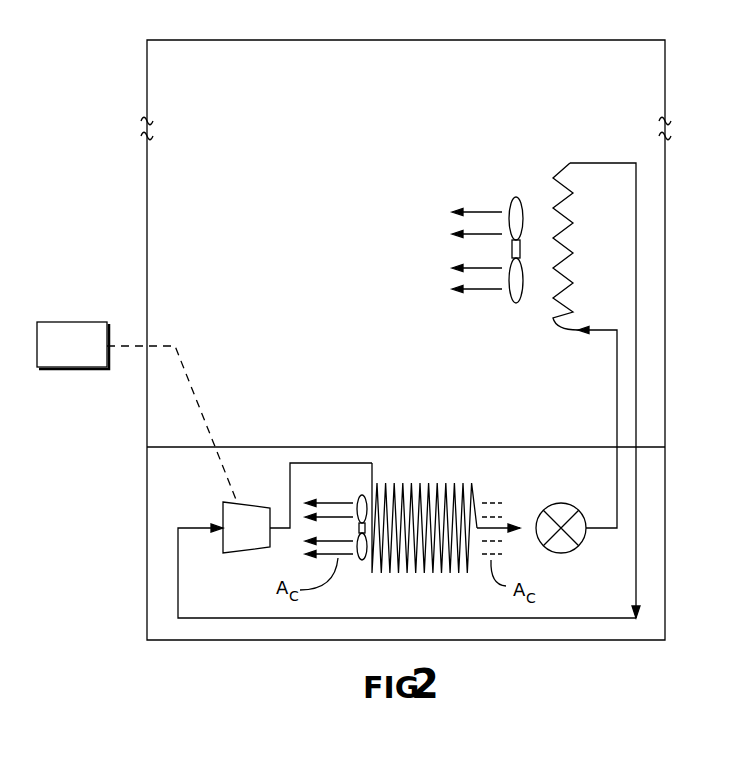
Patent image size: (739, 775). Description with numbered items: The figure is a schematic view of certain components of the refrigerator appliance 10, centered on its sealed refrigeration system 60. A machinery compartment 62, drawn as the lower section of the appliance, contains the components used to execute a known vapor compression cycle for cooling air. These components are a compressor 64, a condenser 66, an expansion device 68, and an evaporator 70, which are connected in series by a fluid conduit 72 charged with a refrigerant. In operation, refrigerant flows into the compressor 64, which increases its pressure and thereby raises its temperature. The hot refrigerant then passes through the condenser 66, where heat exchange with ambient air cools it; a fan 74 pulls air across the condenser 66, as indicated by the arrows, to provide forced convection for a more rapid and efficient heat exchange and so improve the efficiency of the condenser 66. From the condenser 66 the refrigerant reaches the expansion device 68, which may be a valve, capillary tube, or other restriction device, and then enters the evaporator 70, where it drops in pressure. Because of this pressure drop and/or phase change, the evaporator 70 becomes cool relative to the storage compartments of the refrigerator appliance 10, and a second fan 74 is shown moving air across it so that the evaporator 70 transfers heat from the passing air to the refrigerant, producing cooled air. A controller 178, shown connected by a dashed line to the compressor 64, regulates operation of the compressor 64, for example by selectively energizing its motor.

The refrigerator appliance 10 is at (103, 207).
The controller 178 is at (58, 356).
The sealed refrigeration system 60 is at (400, 432).
The machinery compartment 62 is at (183, 480).
The compressor 64 is at (247, 501).
The condenser 66 is at (441, 483).
The expansion device 68 is at (553, 507).
The evaporator 70 is at (552, 208).
The fluid conduit 72 is at (548, 621).
The fan 74 is at (515, 196).